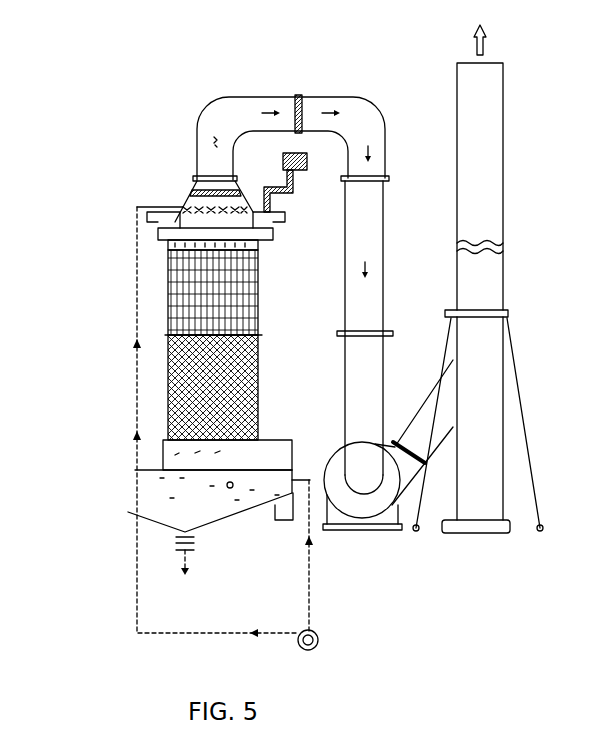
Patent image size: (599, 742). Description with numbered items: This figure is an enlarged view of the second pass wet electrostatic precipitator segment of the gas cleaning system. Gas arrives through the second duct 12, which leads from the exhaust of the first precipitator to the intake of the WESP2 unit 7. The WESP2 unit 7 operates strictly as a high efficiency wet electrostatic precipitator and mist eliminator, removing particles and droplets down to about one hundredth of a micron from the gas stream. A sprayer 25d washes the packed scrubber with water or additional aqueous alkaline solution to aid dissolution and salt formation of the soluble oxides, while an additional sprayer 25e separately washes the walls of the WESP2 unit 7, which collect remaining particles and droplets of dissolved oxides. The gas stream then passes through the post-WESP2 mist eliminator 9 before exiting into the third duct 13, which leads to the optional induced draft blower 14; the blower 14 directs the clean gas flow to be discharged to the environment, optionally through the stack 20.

The third duct 13 is at (240, 105).
The post-WESP2 mist eliminator 9 is at (200, 183).
The additional sprayer 25e is at (182, 207).
The sprayer 25d is at (165, 336).
The second pass Wet Electrostatic Precipitator Unit (WESP2) 7 is at (165, 378).
The second duct 12 is at (147, 450).
The induced draft blower 14 is at (366, 505).
The stack 20 is at (480, 187).